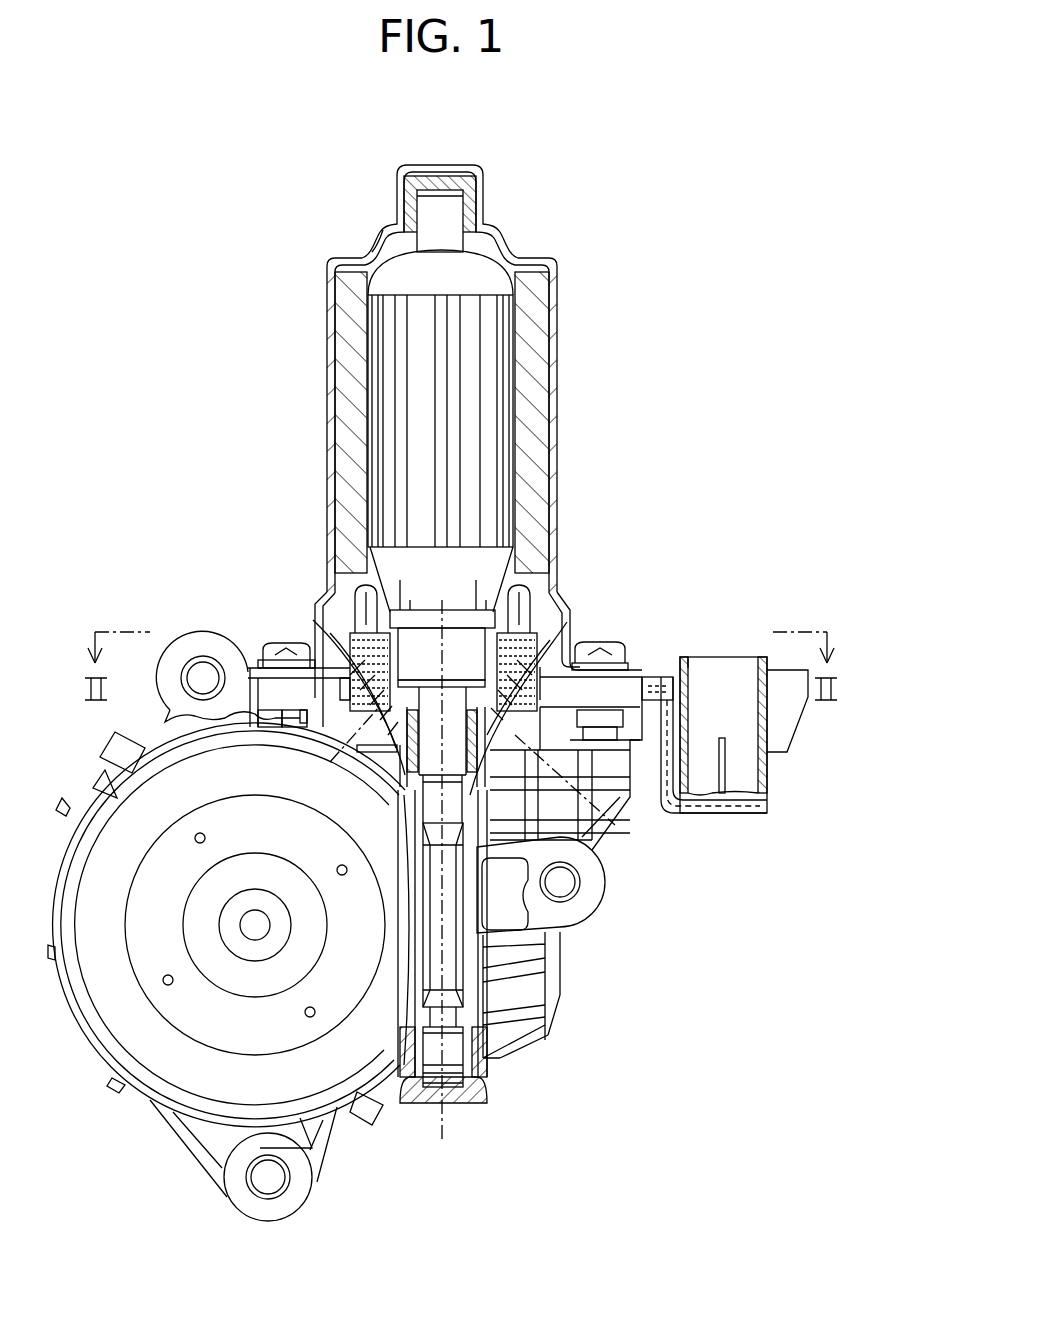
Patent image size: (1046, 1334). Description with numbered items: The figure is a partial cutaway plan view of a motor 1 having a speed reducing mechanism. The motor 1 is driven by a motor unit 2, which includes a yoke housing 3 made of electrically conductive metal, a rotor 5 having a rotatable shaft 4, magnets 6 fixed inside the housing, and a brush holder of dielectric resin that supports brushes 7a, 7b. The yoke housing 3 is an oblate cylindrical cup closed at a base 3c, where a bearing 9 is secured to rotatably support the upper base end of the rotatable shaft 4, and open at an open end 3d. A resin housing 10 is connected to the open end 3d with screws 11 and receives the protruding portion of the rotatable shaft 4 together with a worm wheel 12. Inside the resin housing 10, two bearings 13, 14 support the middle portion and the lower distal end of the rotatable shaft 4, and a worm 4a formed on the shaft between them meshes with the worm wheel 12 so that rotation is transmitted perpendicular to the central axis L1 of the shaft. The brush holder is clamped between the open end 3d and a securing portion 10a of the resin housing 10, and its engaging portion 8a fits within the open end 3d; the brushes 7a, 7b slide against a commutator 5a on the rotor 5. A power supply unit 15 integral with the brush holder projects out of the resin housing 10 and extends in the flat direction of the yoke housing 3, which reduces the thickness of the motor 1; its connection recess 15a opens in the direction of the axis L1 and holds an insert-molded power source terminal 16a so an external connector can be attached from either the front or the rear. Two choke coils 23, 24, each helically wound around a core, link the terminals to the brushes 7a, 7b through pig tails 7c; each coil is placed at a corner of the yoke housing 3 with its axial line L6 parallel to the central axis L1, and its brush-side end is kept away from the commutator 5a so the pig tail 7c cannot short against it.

The motor 1 is at (628, 187).
The motor unit 2 is at (329, 258).
The yoke housing 3 is at (558, 316).
The base 3c is at (520, 228).
The open end 3d is at (568, 655).
The rotatable shaft 4 is at (400, 812).
The worm 4a is at (450, 952).
The rotor 5 is at (500, 430).
The commutator 5a is at (430, 612).
The magnets 6 is at (340, 358).
The brush 7a is at (476, 589).
The brush 7b is at (442, 598).
The pig tail 7c is at (360, 592).
The engaging portion 8a is at (572, 632).
The bearing 9 is at (470, 186).
The resin housing 10 is at (606, 890).
The securing portion 10a is at (258, 690).
The screws 11 is at (272, 643).
The worm wheel 12 is at (410, 945).
The bearing 13 is at (400, 775).
The bearing 14 is at (490, 1058).
The power supply unit 15 is at (745, 813).
The connection recess 15a is at (695, 660).
The power source terminal 16a is at (722, 740).
The choke coil 23 is at (555, 582).
The choke coil 24 is at (315, 600).
The central axis L1 is at (450, 1130).
The axial line L6 is at (330, 760).